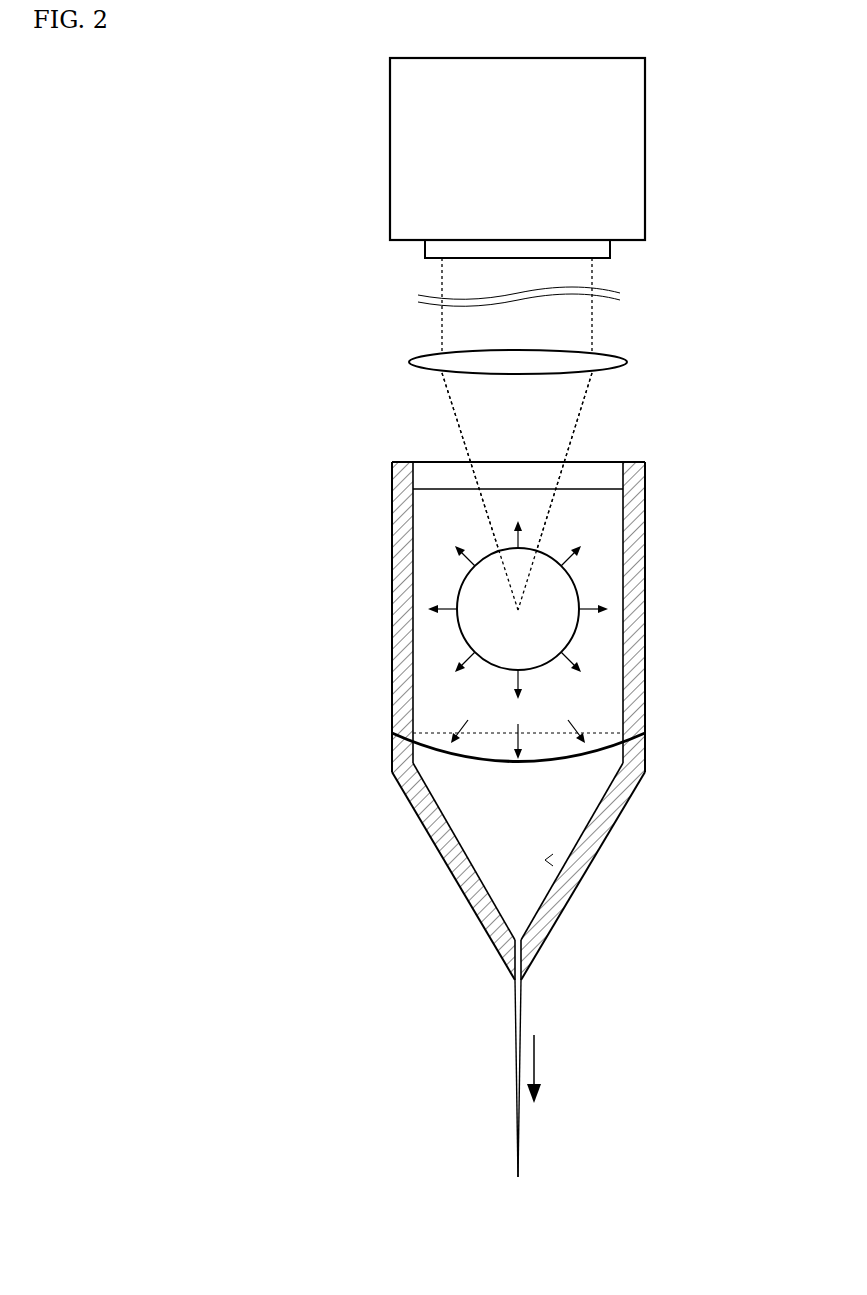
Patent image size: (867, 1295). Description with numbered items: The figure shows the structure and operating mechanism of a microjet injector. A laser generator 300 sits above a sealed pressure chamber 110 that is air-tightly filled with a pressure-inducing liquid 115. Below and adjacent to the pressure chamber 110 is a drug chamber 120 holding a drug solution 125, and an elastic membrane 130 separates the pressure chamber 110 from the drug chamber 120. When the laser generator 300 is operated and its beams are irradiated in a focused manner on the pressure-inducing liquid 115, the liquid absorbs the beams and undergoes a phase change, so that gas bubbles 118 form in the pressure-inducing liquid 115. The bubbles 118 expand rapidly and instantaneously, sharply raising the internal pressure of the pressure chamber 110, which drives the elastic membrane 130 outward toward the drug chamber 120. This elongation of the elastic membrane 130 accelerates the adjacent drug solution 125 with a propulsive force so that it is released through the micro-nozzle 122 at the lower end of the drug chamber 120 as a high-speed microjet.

The laser generator 300 is at (645, 152).
The pressure chamber 110 is at (604, 713).
The pressure-inducing liquid 115 is at (585, 521).
The gas bubbles 118 is at (545, 628).
The elastic membrane 130 is at (583, 750).
The drug chamber 120 is at (543, 821).
The drug solution 125 is at (592, 862).
The micro-nozzle 122 is at (508, 957).